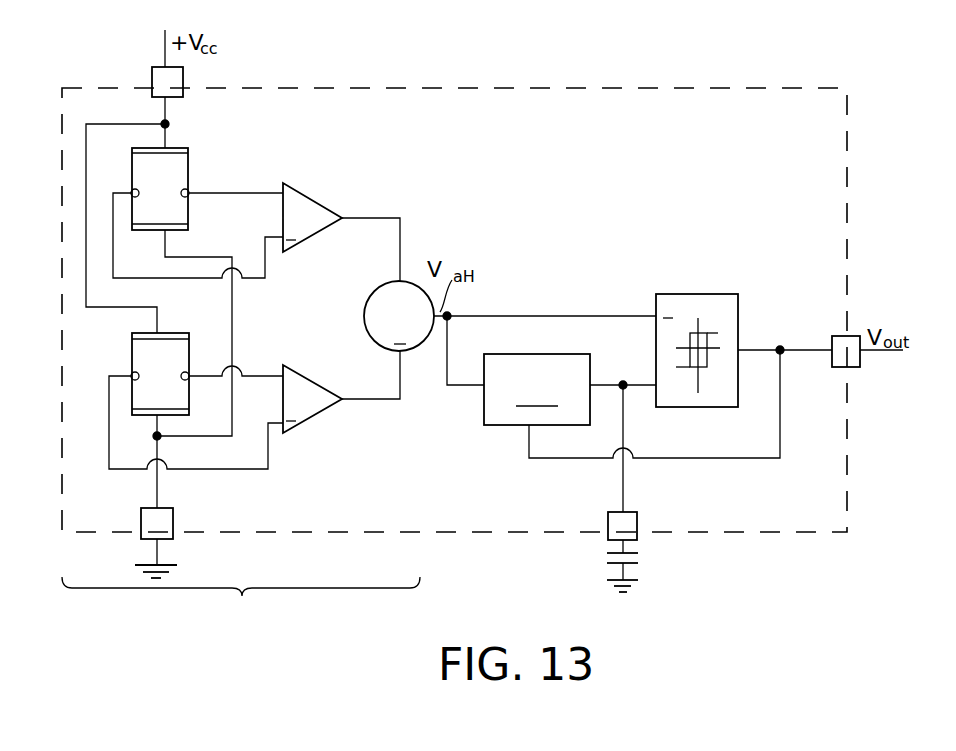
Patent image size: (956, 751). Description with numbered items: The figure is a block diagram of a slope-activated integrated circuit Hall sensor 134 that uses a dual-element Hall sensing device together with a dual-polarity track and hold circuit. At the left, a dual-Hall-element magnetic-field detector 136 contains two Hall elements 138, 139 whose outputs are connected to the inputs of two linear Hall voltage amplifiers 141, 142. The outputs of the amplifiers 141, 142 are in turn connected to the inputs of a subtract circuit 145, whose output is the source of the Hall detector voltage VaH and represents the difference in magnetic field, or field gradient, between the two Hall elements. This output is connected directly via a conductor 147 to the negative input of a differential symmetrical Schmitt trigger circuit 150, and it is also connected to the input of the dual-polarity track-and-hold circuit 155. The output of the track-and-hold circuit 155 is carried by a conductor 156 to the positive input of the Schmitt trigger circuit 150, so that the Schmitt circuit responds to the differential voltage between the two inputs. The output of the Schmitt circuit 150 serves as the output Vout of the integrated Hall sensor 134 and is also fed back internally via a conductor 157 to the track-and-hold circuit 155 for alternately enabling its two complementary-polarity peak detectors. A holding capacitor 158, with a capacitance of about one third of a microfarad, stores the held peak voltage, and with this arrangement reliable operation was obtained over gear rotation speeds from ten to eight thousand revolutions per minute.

The integrated circuit Hall sensor 134 is at (617, 85).
The dual-Hall-element magnetic-field detector 136 is at (241, 602).
The Hall element 138 is at (178, 174).
The Hall element 139 is at (180, 354).
The linear Hall voltage amplifier 141 is at (313, 213).
The linear Hall voltage amplifier 142 is at (313, 395).
The subtract circuit 145 is at (380, 305).
The conductor 147 is at (570, 316).
The differential symmetrical Schmitt trigger circuit 150 is at (727, 300).
The dual-polarity track-and-hold circuit 155 is at (537, 389).
The conductor 156 is at (603, 383).
The conductor 157 is at (555, 460).
The holding capacitor 158 is at (638, 555).